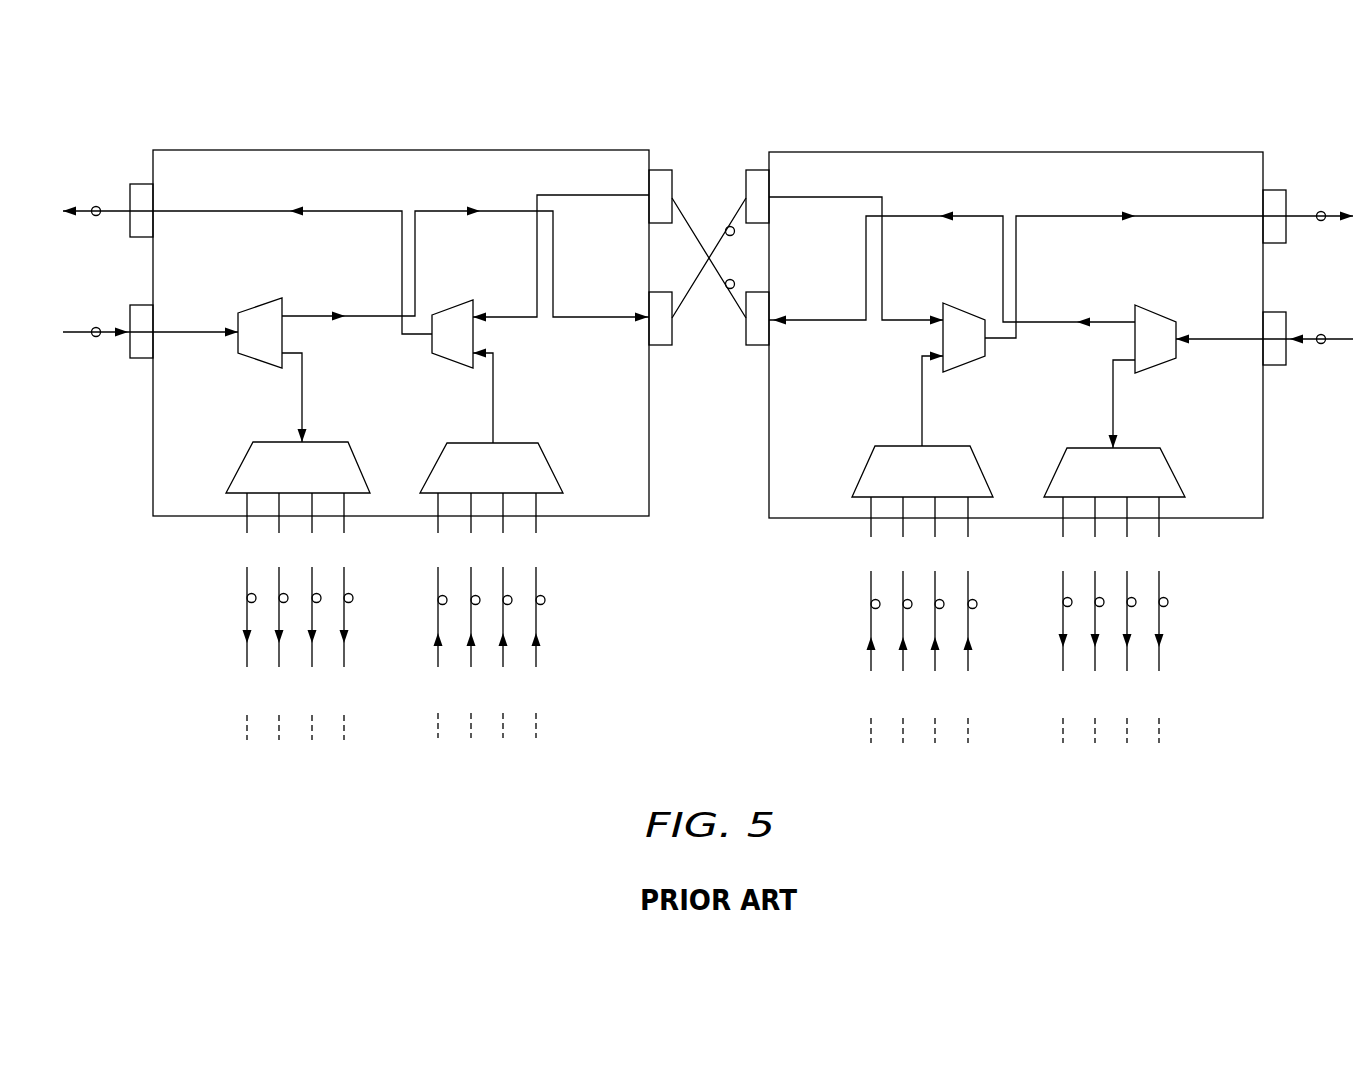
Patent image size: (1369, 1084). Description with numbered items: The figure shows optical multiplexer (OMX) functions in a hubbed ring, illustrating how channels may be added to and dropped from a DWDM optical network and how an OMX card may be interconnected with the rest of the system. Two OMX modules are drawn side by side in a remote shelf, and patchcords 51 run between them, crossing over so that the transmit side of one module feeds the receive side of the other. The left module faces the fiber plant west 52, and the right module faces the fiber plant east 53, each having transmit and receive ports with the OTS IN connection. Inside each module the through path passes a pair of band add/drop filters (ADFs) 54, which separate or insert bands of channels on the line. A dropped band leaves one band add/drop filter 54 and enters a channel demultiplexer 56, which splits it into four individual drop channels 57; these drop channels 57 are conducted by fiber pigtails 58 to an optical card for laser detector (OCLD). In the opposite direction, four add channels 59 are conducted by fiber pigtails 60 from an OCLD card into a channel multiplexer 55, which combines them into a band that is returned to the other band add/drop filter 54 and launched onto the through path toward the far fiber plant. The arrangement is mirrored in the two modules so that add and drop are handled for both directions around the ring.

The patchcords 51 is at (702, 172).
The fiber plant west 52 is at (88, 386).
The fiber plant east 53 is at (1322, 199).
The band add/drop filter 54 is at (272, 346).
The channel multiplexer 55 is at (504, 481).
The channel demultiplexer 56 is at (312, 481).
The drop channels 57 is at (690, 602).
The fiber pigtails 58 is at (697, 728).
The add channels 59 is at (699, 599).
The fiber pigtails 60 is at (703, 729).